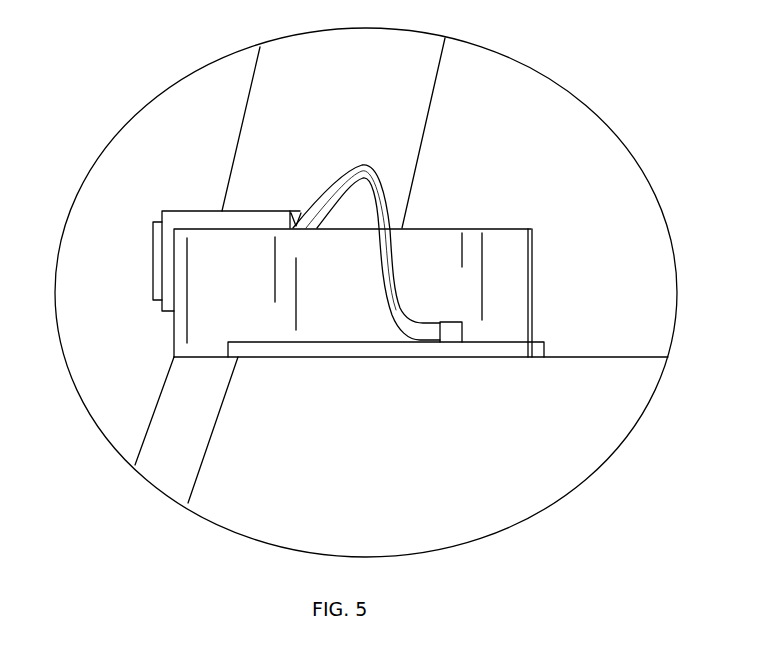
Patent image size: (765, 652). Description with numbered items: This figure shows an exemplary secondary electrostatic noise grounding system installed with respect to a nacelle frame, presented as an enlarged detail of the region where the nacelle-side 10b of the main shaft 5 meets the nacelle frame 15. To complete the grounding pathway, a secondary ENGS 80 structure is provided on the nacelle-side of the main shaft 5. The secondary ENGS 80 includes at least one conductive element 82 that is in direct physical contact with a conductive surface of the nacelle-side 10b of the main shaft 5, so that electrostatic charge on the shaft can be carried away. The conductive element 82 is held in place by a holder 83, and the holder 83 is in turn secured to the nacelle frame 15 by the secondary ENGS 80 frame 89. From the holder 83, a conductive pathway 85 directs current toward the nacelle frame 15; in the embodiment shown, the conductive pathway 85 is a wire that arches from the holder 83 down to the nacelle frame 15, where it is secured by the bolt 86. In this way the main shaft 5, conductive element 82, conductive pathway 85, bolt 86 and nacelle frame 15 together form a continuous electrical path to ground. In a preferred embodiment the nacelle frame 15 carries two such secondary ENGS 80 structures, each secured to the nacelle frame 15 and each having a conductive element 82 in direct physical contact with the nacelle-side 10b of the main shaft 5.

The main shaft 5 is at (192, 88).
The housing wall portion 10b is at (187, 162).
The nacelle frame 15 is at (385, 468).
The secondary ENGS 80 is at (357, 239).
The conductive element 82 is at (153, 260).
The holder 83 is at (302, 212).
The conductive pathway 85 is at (365, 163).
The bolt 86 is at (447, 322).
The secondary ENGS frame 89 is at (533, 280).